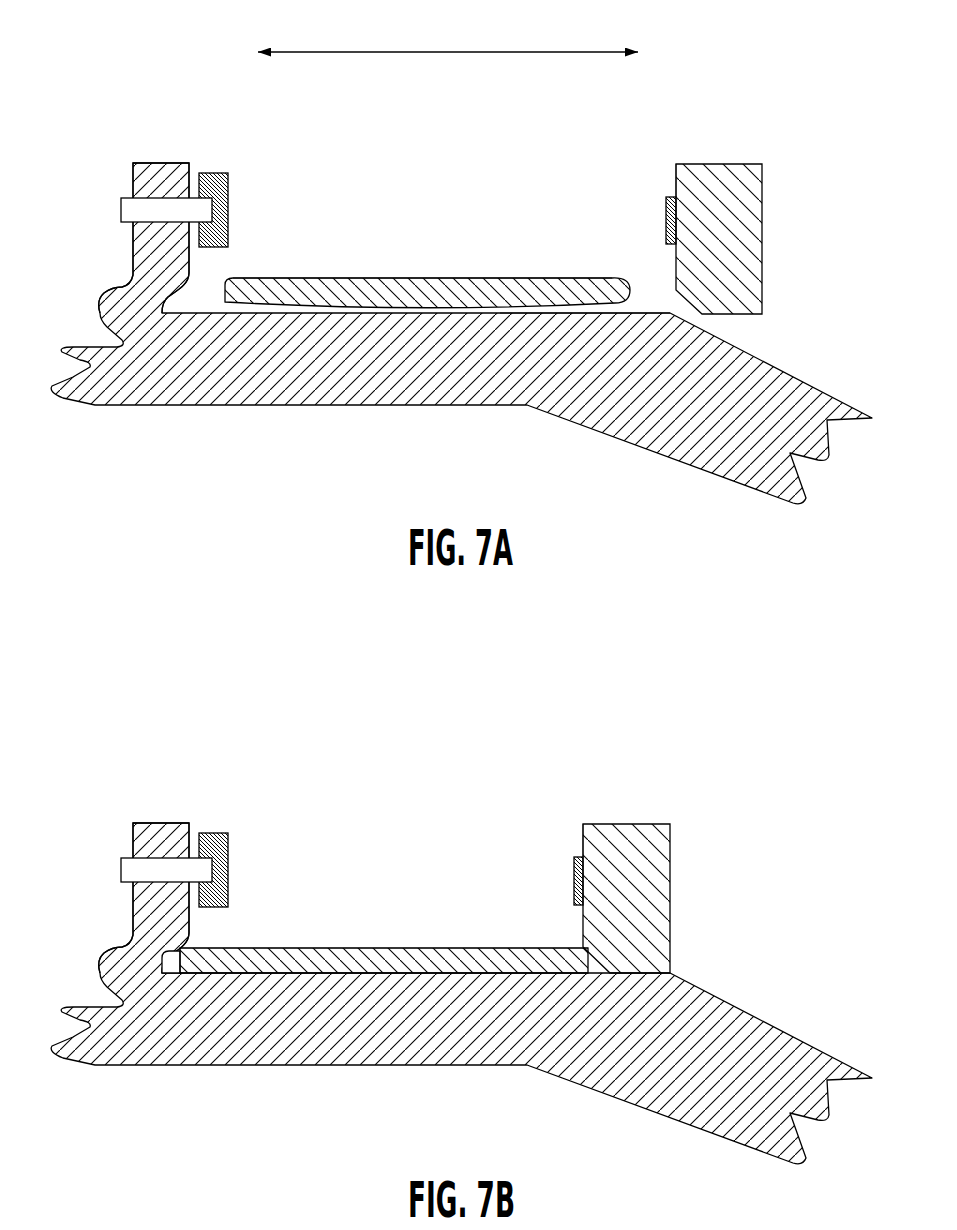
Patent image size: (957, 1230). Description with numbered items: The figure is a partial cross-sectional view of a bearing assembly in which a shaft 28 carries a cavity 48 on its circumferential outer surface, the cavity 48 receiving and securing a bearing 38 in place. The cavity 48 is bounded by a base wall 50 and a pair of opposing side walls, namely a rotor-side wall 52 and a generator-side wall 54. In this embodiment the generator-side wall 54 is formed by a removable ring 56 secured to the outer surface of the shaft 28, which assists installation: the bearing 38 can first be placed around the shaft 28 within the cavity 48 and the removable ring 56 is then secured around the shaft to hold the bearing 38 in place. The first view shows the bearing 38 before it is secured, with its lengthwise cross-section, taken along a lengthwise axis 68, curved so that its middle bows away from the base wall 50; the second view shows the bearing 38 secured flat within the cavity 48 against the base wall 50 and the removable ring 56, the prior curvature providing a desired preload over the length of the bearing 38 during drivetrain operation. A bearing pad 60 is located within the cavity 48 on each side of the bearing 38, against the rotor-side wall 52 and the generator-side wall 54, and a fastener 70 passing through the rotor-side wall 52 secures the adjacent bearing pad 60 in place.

In FIG. 7A, the shaft 28 is at (232, 410).
In FIG. 7B, the shaft 28 is at (198, 1069).
In FIG. 7A, the bearing 38 is at (288, 276).
In FIG. 7B, the bearing 38 is at (288, 945).
In FIG. 7A, the cavity 48 is at (430, 263).
In FIG. 7B, the cavity 48 is at (447, 929).
In FIG. 7A, the base wall 50 is at (647, 313).
In FIG. 7B, the base wall 50 is at (265, 972).
In FIG. 7A, the rotor-side wall 52 is at (189, 273).
In FIG. 7B, the rotor-side wall 52 is at (189, 933).
In FIG. 7A, the generator-side wall 54 is at (676, 182).
In FIG. 7B, the generator-side wall 54 is at (583, 842).
In FIG. 7A, the removable ring 56 is at (764, 243).
In FIG. 7B, the removable ring 56 is at (672, 903).
In FIG. 7A, the bearing pad 60 is at (214, 173).
In FIG. 7B, the bearing pad 60 is at (214, 833).
In FIG. 7A, the lengthwise axis 68 is at (435, 52).
In FIG. 7A, the fastener 70 is at (122, 213).
In FIG. 7B, the fastener 70 is at (122, 873).